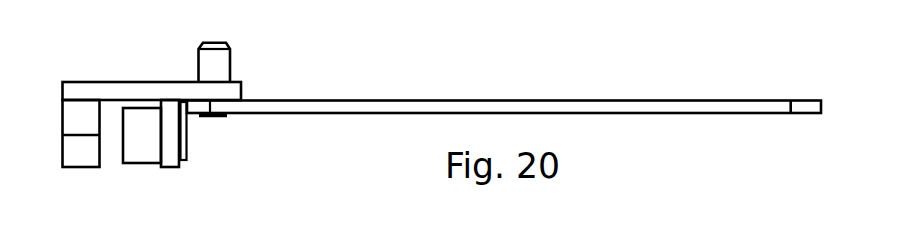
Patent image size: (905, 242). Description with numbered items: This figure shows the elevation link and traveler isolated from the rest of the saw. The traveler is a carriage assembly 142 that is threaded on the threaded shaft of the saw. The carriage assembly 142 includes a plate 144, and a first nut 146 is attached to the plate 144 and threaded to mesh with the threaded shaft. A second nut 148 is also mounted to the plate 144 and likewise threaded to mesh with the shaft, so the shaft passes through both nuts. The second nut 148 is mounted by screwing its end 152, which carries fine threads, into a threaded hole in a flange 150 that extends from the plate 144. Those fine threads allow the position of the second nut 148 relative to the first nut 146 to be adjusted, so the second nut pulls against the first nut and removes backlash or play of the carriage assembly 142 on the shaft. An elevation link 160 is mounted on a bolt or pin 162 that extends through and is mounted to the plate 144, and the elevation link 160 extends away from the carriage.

The carriage assembly 142 is at (161, 117).
The plate 144 is at (73, 88).
The first nut 146 is at (82, 153).
The second nut 148 is at (142, 140).
The flange 150 is at (170, 153).
The end 152 is at (188, 143).
The elevation link 160 is at (612, 105).
The bolt or pin 162 is at (213, 65).